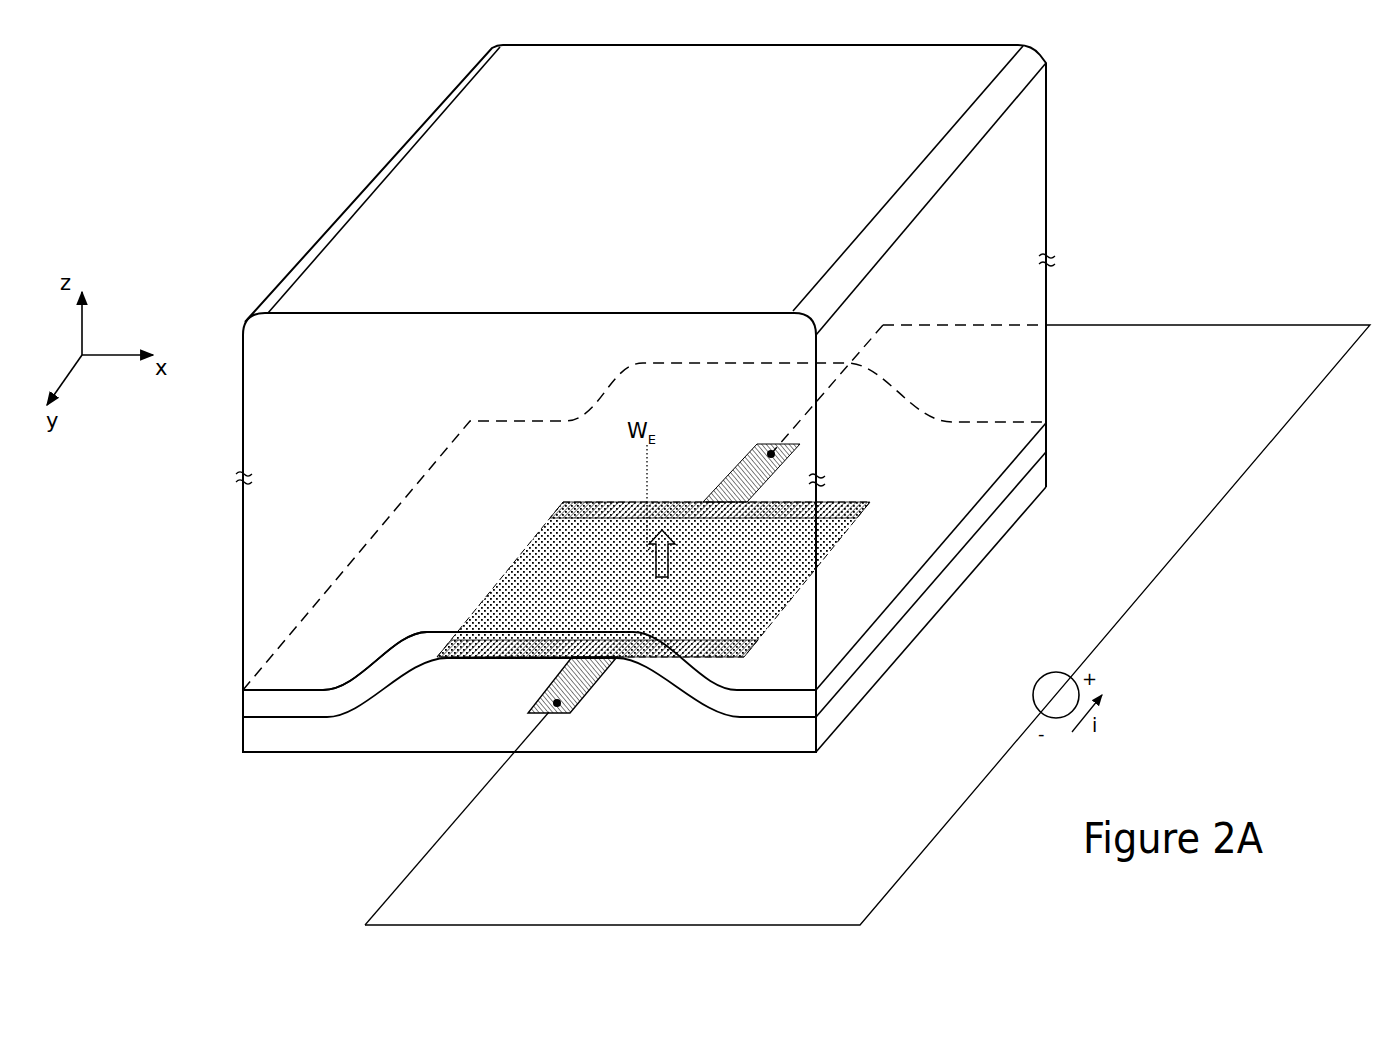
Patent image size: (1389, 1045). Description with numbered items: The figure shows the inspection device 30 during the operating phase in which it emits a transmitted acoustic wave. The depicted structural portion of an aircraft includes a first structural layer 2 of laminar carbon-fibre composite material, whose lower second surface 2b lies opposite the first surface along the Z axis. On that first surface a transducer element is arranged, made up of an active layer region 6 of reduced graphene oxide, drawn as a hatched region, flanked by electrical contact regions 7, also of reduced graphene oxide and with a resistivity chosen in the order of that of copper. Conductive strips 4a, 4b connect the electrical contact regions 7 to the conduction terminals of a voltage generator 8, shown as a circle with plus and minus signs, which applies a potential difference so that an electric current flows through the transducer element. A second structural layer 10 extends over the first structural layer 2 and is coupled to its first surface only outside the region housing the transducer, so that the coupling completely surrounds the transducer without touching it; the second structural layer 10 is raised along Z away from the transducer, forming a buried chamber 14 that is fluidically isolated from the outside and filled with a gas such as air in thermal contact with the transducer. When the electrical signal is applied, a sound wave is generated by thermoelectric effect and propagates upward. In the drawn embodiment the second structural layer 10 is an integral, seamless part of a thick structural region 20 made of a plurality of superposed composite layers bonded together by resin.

The device 30 is at (235, 200).
The thick structural region 20 is at (1000, 191).
The first structural layer 2 is at (250, 738).
The second surface 2b is at (280, 756).
The second structural layer 10 is at (250, 700).
The chamber 14 is at (425, 689).
The active layer region 6 is at (579, 570).
The electrical contact regions 7 is at (843, 500).
The conductive strip 4a is at (603, 678).
The conductive strip 4b is at (751, 442).
The voltage generator 8 is at (1052, 672).